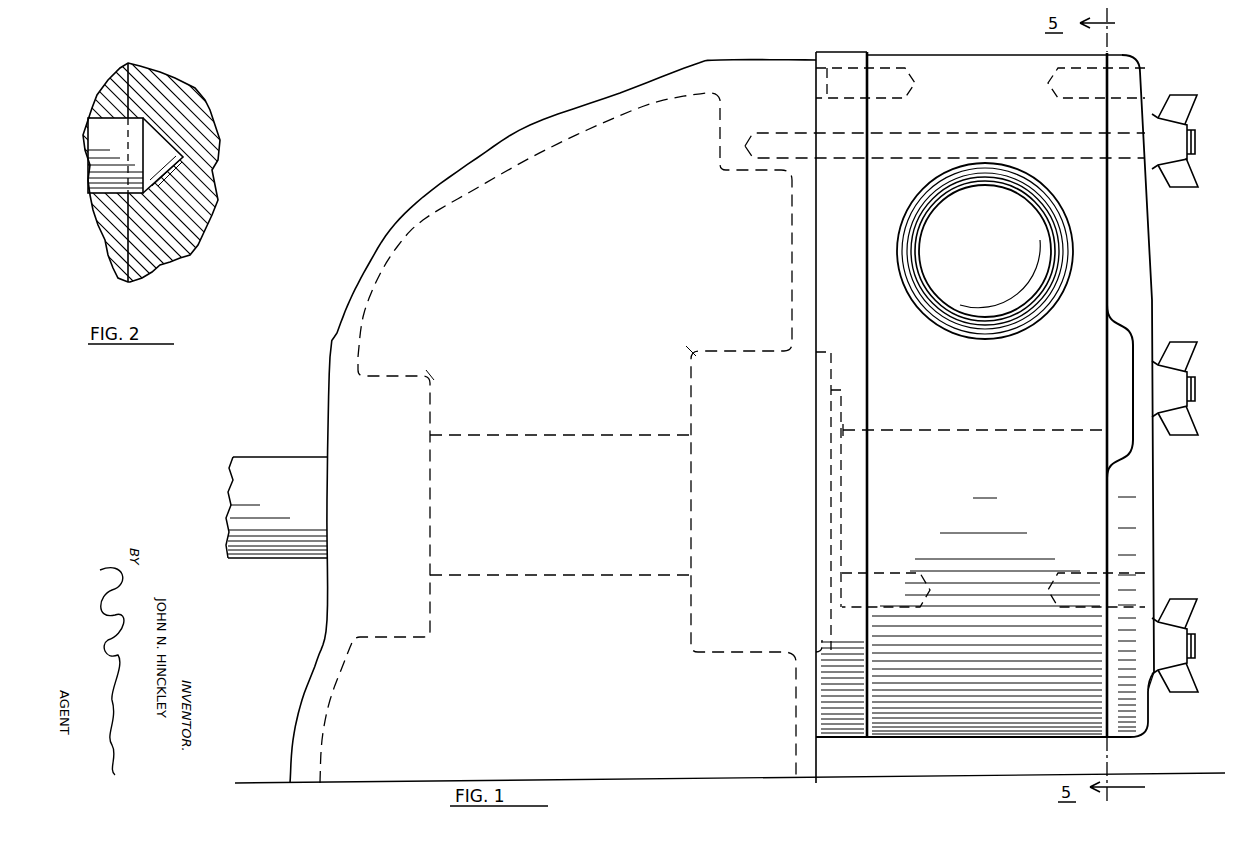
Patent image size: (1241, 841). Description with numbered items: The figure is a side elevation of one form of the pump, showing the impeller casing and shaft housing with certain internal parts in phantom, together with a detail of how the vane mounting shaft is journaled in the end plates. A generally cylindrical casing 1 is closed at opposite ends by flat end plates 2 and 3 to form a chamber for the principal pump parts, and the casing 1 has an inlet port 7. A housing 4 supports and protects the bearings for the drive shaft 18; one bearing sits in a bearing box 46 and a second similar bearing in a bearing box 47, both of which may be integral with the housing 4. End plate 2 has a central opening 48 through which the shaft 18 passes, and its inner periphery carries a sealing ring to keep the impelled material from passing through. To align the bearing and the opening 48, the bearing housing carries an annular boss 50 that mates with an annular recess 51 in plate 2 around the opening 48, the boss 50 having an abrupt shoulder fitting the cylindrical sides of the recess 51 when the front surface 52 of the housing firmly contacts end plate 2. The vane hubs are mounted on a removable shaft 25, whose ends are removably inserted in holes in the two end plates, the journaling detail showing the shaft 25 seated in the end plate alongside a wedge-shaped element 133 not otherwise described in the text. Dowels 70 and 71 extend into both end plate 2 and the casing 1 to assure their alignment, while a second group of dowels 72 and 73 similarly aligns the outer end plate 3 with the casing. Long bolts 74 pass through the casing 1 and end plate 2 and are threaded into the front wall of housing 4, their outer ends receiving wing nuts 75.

In FIG. 2, the casing 1 is at (192, 85).
In FIG. 1, the casing 1 is at (974, 395).
In FIG. 2, the end plate 2 is at (100, 232).
In FIG. 1, the end plate 2 is at (845, 728).
In FIG. 1, the end plate 3 is at (1135, 700).
In FIG. 1, the housing 4 is at (553, 421).
In FIG. 1, the inlet port 7 is at (997, 298).
In FIG. 1, the drive shaft 18 is at (305, 532).
In FIG. 2, the removable shaft 25 is at (98, 130).
In FIG. 1, the bearing box 46 is at (690, 348).
In FIG. 1, the bearing box 47 is at (432, 372).
In FIG. 1, the central opening 48 is at (845, 432).
In FIG. 1, the annular boss 50 is at (825, 650).
In FIG. 1, the annular recess 51 is at (830, 375).
In FIG. 1, the front surface 52 is at (823, 244).
In FIG. 1, the dowel 70 is at (878, 72).
In FIG. 1, the dowel 71 is at (838, 590).
In FIG. 1, the dowel 72 is at (1118, 68).
In FIG. 1, the dowel 73 is at (1125, 570).
In FIG. 1, the long bolt 74 is at (1196, 140).
In FIG. 1, the wing nut 75 is at (1178, 122).
In FIG. 2, the cutting tip 133 is at (165, 137).